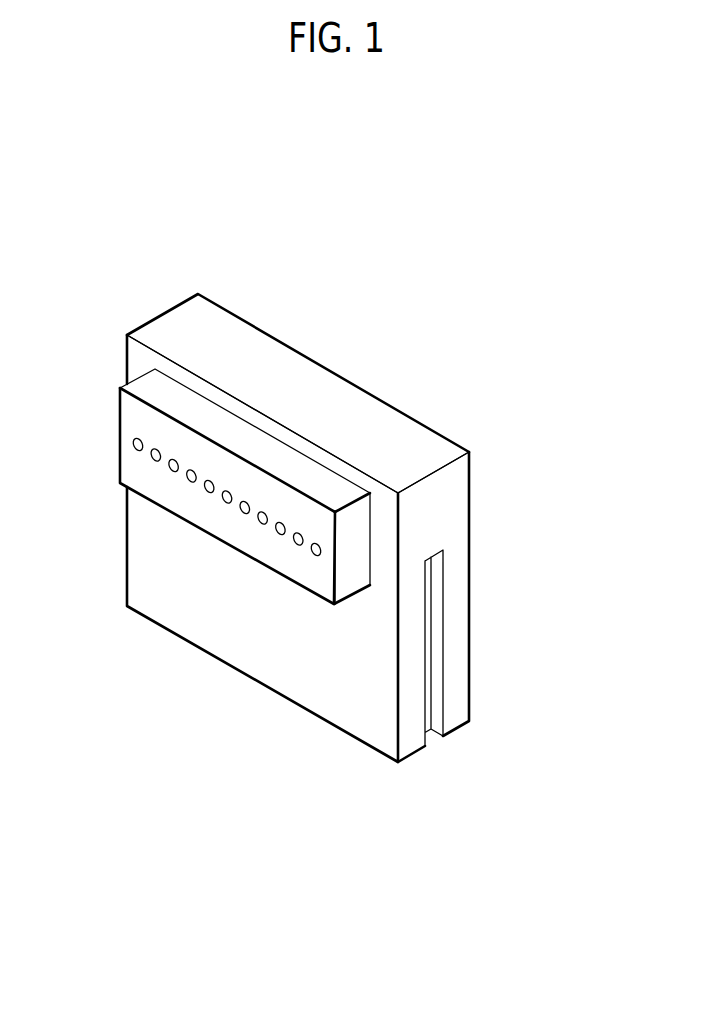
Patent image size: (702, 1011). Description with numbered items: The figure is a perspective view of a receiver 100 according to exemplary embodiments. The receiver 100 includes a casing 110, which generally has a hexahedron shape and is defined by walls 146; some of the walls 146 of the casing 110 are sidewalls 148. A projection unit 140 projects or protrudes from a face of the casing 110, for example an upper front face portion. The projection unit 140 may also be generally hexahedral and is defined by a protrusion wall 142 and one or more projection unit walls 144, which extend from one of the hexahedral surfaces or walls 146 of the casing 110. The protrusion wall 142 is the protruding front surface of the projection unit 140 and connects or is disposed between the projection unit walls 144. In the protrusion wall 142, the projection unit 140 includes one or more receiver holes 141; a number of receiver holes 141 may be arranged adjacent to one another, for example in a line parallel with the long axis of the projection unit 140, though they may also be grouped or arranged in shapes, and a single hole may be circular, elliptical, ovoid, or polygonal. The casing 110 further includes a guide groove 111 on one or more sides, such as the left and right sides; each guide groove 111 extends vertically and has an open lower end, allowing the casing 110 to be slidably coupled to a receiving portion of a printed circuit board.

The receiver 100 is at (157, 310).
The casing 110 is at (457, 517).
The guide groove 111 is at (434, 670).
The projection unit 140 is at (155, 484).
The receiver hole 141 is at (298, 543).
The protrusion wall 142 is at (233, 473).
The projection unit wall 144 is at (283, 465).
The wall 146 is at (345, 714).
The sidewall 148 is at (458, 607).